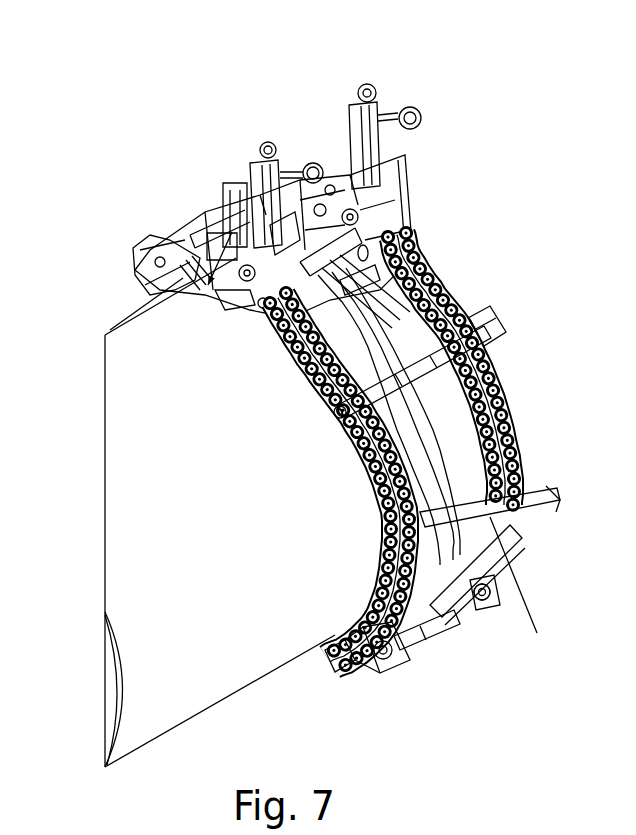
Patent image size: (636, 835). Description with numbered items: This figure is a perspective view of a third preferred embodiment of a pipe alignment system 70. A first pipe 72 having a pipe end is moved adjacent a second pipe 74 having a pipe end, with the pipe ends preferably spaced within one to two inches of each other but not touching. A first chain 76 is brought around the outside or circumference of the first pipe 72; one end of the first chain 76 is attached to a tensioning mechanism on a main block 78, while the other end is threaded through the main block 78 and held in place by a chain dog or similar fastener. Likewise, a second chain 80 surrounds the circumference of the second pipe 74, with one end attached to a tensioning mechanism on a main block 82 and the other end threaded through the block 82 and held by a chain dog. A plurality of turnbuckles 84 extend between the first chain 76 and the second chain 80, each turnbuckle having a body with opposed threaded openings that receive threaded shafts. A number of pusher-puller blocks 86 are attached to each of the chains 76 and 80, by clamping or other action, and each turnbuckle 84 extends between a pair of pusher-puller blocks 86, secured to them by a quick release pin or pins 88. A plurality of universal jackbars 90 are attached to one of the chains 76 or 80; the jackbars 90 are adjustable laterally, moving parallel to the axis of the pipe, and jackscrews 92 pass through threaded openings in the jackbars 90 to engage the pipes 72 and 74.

The pipe alignment system 70 is at (447, 133).
The first pipe 72 is at (128, 540).
The second pipe 74 is at (462, 458).
The first chain 76 is at (386, 462).
The main block 78 is at (230, 248).
The second chain 80 is at (435, 267).
The main block 82 is at (330, 186).
The turnbuckle 84 is at (433, 357).
The pusher-puller block 86 is at (490, 327).
The quick release pin 88 is at (333, 414).
The universal jackbar 90 is at (510, 550).
The jackscrew 92 is at (486, 586).